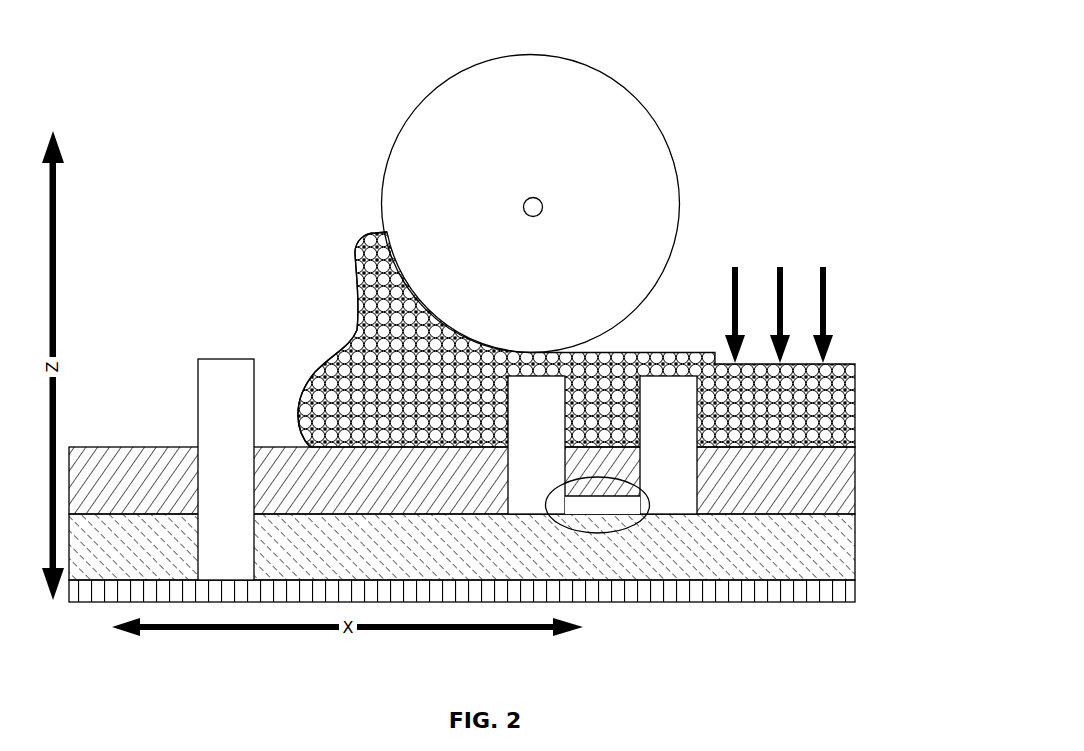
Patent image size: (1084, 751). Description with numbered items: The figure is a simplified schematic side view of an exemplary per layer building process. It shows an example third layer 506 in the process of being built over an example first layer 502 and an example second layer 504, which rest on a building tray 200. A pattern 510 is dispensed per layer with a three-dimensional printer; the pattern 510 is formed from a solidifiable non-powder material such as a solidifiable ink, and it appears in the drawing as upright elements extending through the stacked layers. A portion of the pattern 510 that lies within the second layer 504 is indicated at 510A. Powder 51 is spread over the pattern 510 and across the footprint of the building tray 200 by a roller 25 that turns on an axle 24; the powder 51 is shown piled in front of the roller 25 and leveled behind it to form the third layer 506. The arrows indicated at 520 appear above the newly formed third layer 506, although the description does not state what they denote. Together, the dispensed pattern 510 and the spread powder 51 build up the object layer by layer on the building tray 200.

The axle 24 is at (524, 203).
The roller 25 is at (678, 190).
The powder 51 is at (352, 318).
The building tray 200 is at (855, 593).
The first layer 502 is at (855, 548).
The second layer 504 is at (855, 485).
The third layer 506 is at (855, 415).
The pattern 510 is at (197, 402).
The portion of pattern 510A is at (603, 533).
The pressure arrows 520 is at (827, 307).